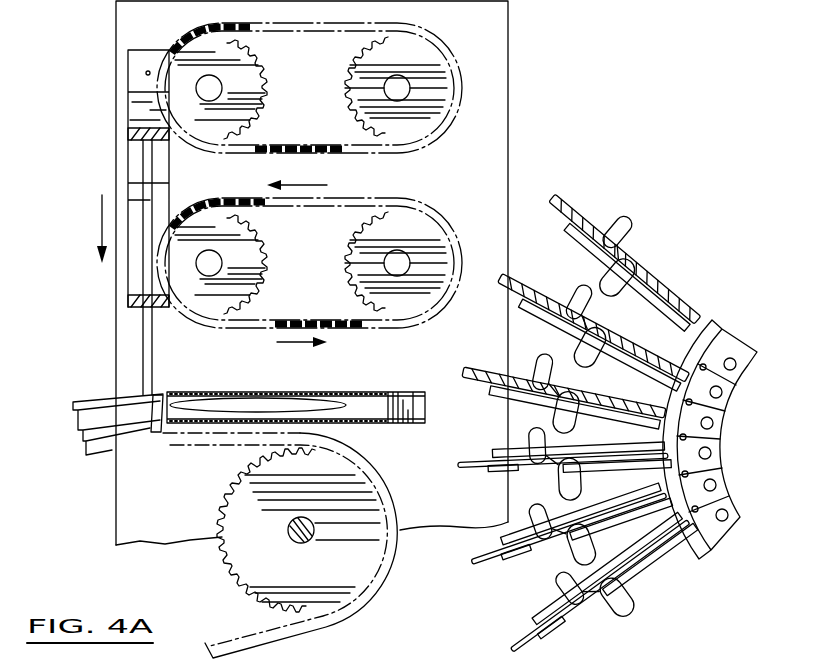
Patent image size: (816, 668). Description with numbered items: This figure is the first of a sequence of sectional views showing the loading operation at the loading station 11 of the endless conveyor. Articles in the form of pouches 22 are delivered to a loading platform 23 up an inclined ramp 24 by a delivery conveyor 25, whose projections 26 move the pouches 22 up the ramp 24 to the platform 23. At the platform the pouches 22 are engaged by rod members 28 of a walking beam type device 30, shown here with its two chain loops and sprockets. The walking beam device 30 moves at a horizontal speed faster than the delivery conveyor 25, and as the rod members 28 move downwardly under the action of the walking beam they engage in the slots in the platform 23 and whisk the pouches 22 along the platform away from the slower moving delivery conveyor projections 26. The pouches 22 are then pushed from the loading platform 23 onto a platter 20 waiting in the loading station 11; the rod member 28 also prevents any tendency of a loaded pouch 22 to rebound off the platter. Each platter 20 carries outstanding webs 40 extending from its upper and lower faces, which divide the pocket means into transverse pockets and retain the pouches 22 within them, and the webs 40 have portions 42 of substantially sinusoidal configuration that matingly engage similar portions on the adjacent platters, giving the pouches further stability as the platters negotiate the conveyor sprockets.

The loading station 11 is at (608, 173).
The platter 20 is at (523, 637).
The pouch 22 is at (313, 403).
The loading platform 23 is at (415, 397).
The inclined ramp 24 is at (100, 405).
The delivery conveyor 25 is at (348, 608).
The projection 26 is at (156, 434).
The rod member 28 is at (150, 347).
The walking beam type device 30 is at (459, 108).
The outstanding web 40 is at (663, 567).
The substantially sinusoidal portion 42 is at (617, 620).